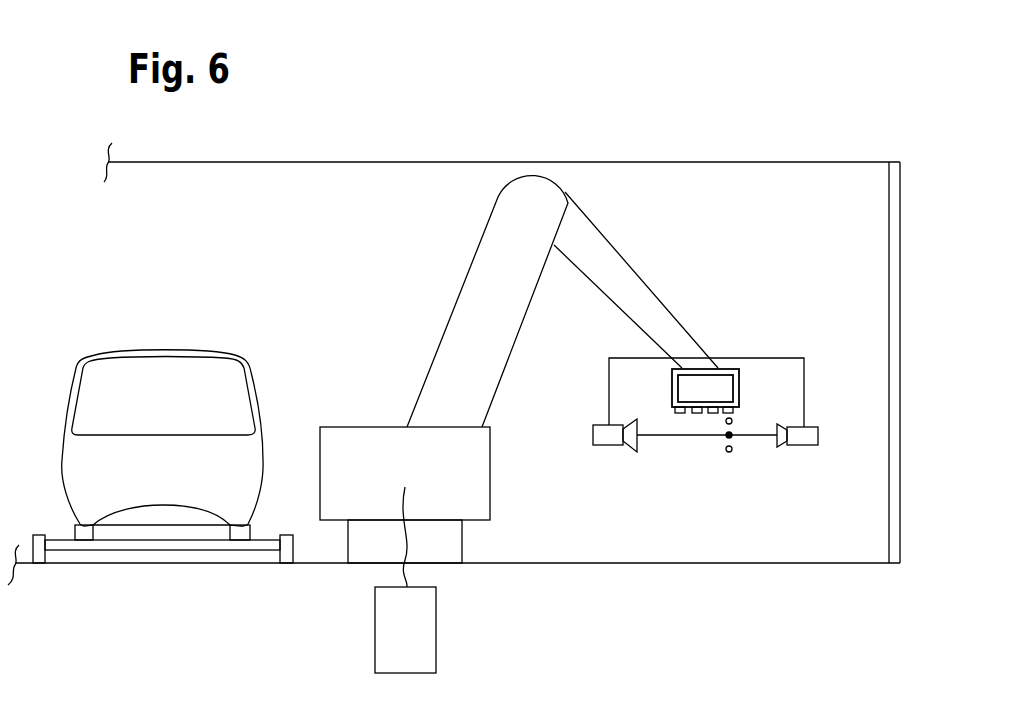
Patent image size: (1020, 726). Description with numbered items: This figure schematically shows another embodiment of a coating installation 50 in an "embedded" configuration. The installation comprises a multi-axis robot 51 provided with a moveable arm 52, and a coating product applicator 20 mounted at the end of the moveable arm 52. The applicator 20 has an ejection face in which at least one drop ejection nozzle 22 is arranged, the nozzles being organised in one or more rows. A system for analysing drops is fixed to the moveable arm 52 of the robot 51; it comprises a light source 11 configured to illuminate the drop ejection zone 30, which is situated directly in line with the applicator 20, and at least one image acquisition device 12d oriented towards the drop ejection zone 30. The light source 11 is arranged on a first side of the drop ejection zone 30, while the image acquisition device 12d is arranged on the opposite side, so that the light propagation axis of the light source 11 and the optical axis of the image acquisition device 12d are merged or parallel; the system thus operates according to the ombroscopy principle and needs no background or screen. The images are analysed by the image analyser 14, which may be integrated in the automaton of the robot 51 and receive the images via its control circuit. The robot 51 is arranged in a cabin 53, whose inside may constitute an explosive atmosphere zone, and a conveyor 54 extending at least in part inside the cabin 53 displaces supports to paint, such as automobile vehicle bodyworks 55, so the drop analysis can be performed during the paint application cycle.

The light source 11 is at (603, 445).
The image acquisition device 12d is at (810, 446).
The image analyser 14 is at (375, 610).
The coating product applicator 20 is at (727, 369).
The drop ejection nozzle 22 is at (680, 413).
The drop ejection zone 30 is at (668, 455).
The coating installation 50 is at (190, 591).
The multi-axis robot 51 is at (397, 365).
The moveable arm 52 is at (620, 283).
The cabin 53 is at (900, 185).
The conveyor 54 is at (65, 541).
The automobile vehicle bodywork 55 is at (256, 402).